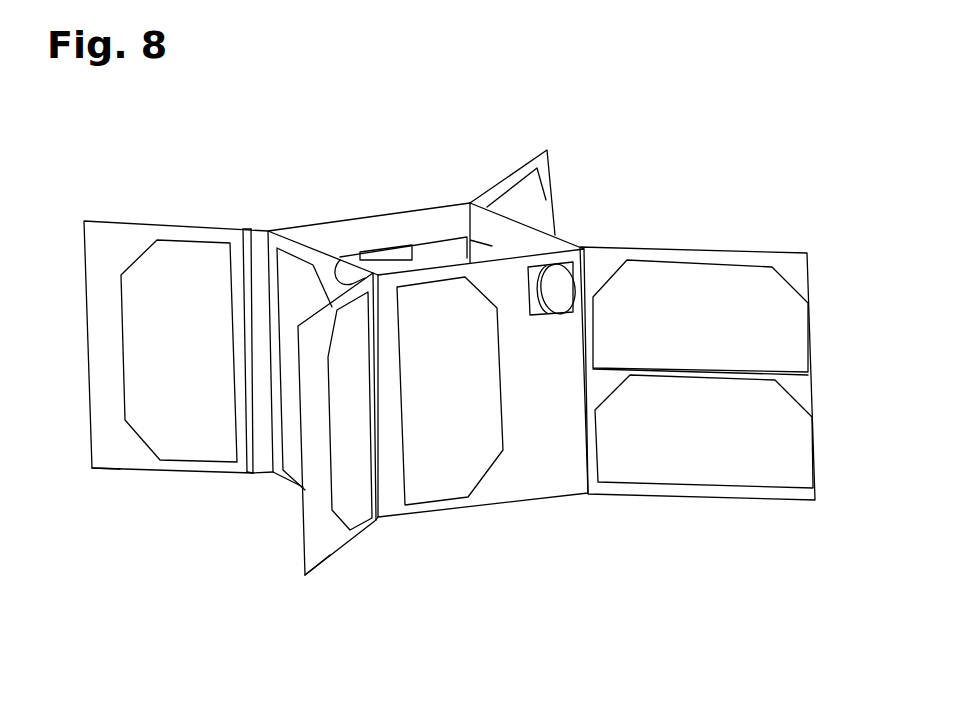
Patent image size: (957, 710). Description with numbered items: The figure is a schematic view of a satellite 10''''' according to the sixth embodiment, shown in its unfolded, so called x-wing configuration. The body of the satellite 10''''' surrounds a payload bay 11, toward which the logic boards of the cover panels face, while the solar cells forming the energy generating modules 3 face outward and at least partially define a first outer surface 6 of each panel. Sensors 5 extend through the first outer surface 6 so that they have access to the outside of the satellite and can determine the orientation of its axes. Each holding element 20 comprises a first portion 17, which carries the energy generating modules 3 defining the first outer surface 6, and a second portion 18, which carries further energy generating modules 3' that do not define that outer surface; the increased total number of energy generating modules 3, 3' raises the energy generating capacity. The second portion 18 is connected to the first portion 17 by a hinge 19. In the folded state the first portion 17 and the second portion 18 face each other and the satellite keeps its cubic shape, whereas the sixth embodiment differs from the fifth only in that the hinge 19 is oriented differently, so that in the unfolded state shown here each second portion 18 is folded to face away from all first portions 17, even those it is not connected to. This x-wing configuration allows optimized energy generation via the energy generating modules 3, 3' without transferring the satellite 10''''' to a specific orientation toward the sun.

The satellite 10''''' is at (325, 314).
The energy generating modules 3 is at (390, 323).
The further energy generating modules 3' is at (452, 317).
The sensors 5 is at (346, 258).
The first outer surface 6 is at (270, 258).
The payload bay 11 is at (456, 215).
The first portion 17 is at (290, 478).
The second portion 18 is at (545, 163).
The hinge 19 is at (262, 467).
The holding element 20 is at (296, 620).